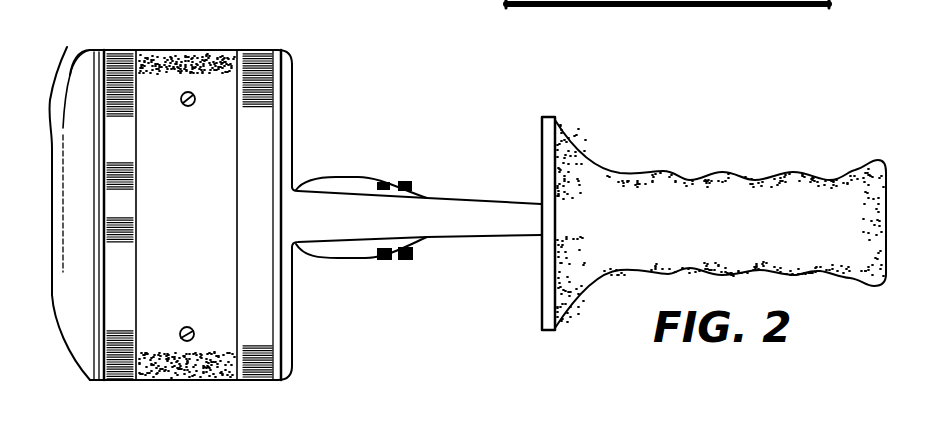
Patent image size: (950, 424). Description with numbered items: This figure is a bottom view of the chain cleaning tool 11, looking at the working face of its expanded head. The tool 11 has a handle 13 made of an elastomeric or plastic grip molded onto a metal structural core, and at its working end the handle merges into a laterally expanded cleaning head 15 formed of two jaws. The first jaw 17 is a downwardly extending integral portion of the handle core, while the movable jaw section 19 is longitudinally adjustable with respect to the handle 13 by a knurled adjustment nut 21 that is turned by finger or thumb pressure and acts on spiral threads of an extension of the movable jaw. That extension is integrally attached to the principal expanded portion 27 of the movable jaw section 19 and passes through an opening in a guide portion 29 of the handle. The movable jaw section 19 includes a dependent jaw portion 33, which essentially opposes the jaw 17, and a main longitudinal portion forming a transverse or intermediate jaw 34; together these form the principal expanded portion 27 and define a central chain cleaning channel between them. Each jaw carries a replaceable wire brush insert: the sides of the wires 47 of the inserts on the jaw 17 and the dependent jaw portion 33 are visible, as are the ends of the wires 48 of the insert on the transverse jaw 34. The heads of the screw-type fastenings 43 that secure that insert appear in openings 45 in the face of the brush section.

The tool 11 is at (603, 133).
The handle 13 is at (698, 180).
The cleaning head 15 is at (128, 36).
The first jaw 17 is at (292, 130).
The movable jaw section 19 is at (85, 382).
The knurled adjustment nut 21 is at (403, 182).
The principal expanded portion 27 is at (182, 50).
The guide portion 29 is at (330, 180).
The dependent jaw portion 33 is at (69, 160).
The transverse jaw 34 is at (199, 225).
The screw-type fastenings 43 is at (183, 105).
The screw fastening openings 45 is at (191, 106).
The wires 47 is at (122, 382).
The wires 48 is at (210, 382).